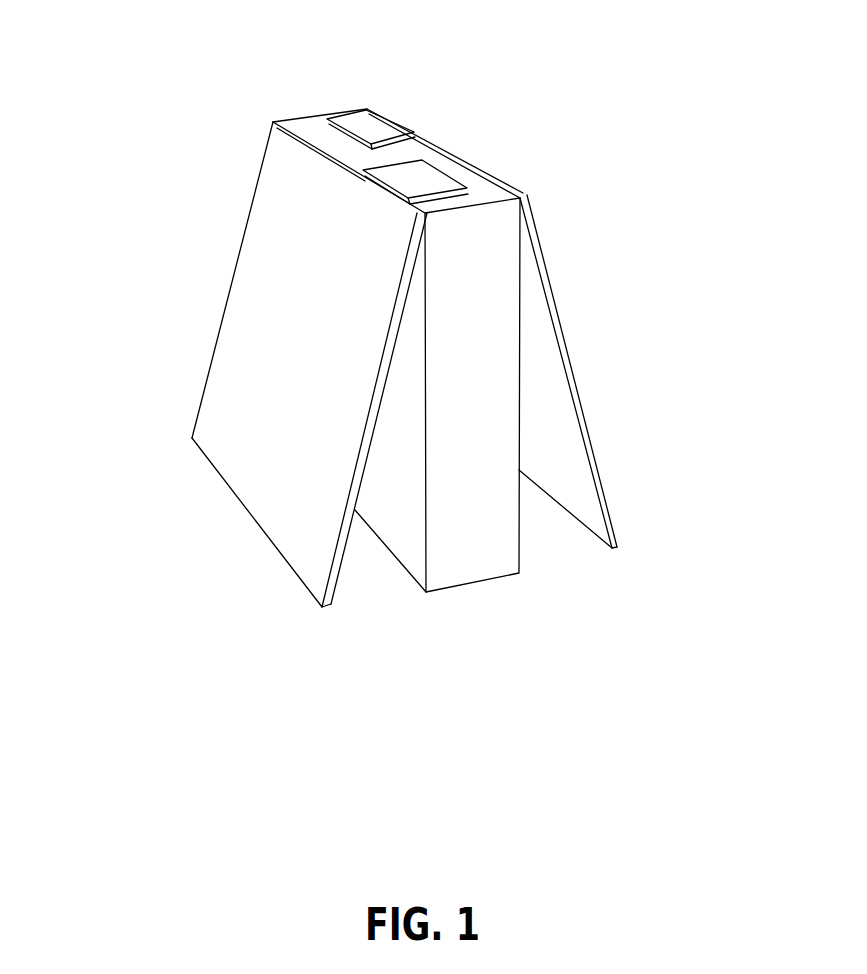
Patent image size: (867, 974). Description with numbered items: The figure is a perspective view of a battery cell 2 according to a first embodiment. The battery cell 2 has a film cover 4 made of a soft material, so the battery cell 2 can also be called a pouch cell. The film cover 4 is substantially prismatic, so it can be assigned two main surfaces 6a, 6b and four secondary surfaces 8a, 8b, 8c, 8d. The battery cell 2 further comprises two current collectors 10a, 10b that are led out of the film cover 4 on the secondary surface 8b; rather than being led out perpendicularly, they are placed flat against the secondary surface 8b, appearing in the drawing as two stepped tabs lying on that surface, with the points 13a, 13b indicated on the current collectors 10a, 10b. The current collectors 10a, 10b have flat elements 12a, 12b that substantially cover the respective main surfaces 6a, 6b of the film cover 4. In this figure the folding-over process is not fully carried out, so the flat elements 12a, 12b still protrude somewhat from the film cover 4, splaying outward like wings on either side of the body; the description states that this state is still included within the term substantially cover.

The battery cell 2 is at (588, 217).
The film cover 4 is at (520, 535).
The main surface 6a is at (193, 337).
The main surface 6b is at (587, 318).
The secondary surface 8a is at (475, 553).
The secondary surface 8b is at (485, 193).
The secondary surface 8c is at (303, 118).
The secondary surface 8d is at (400, 570).
The current collector 10a is at (425, 173).
The current collector 10b is at (378, 128).
The flat element 12a is at (336, 553).
The flat element 12b is at (607, 495).
The front opening 13a is at (430, 182).
The rear opening 13b is at (368, 128).